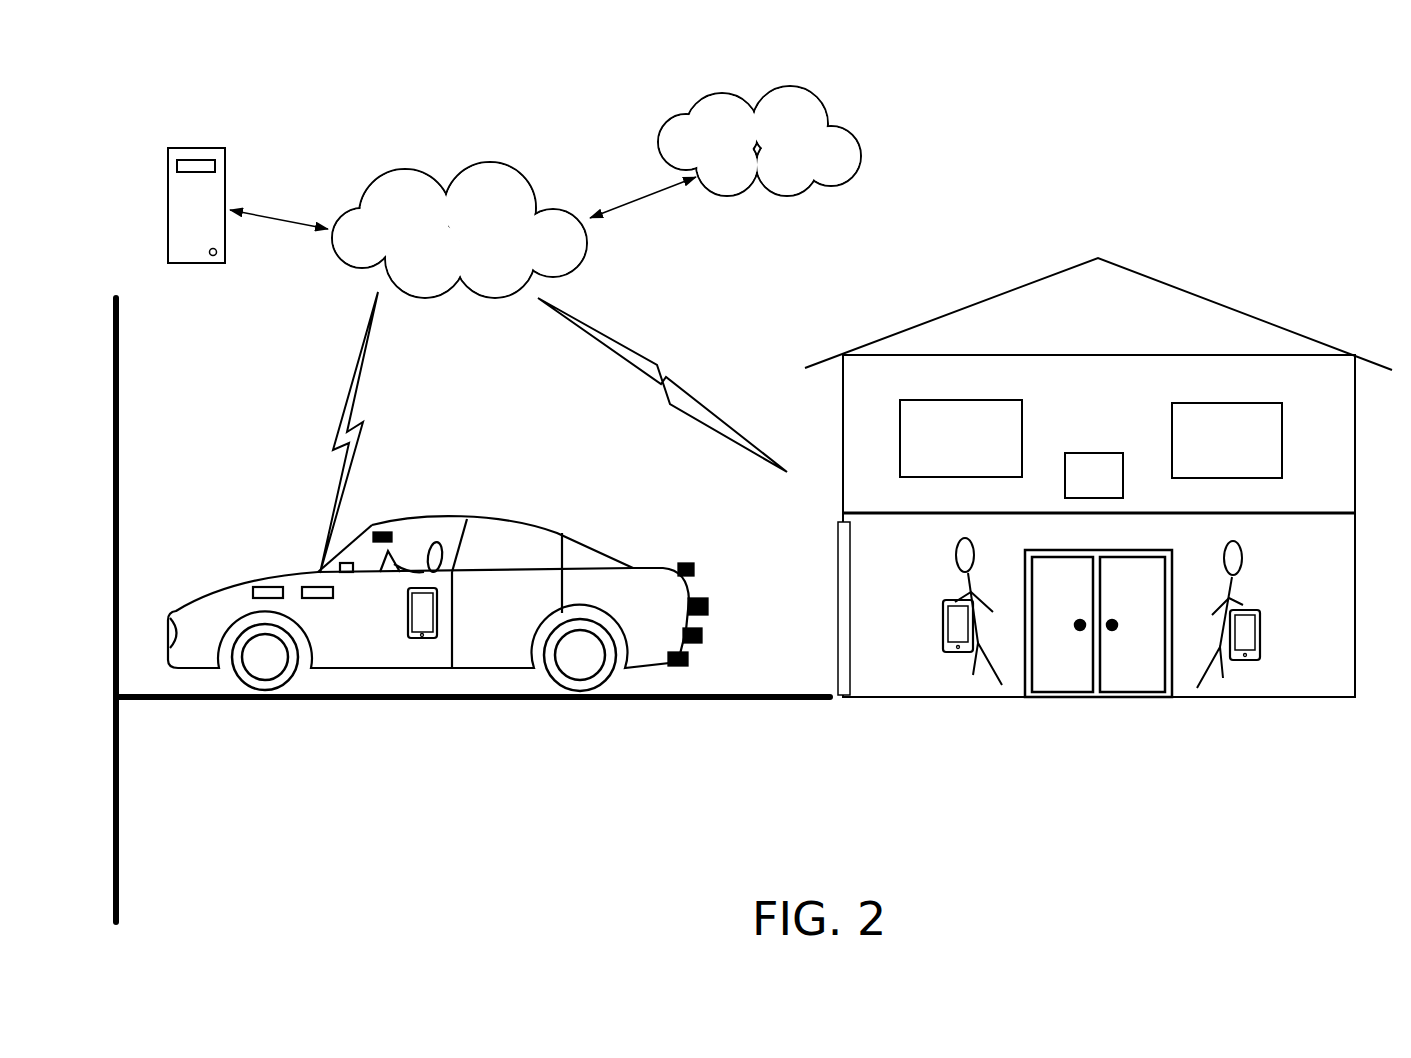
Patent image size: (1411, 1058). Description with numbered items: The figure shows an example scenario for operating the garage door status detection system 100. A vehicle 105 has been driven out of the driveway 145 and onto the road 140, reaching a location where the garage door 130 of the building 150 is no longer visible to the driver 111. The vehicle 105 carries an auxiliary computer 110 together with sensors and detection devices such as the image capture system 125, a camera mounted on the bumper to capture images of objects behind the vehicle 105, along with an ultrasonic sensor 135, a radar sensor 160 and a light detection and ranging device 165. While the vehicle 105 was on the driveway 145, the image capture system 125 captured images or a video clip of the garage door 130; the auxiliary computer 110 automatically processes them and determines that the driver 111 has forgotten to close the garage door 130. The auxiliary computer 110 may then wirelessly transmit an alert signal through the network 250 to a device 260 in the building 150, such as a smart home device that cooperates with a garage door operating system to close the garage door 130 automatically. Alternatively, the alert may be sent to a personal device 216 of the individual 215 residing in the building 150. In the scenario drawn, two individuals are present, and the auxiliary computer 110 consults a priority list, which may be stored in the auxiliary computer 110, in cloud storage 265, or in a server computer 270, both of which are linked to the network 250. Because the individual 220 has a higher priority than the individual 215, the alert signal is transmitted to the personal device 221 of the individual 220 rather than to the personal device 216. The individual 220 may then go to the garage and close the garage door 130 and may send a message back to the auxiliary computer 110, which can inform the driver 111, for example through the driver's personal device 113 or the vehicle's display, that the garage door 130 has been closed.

The garage door status detection system 100 is at (1137, 98).
The vehicle 105 is at (515, 496).
The auxiliary computer 110 is at (313, 598).
The driver 111 is at (426, 528).
The personal device 113 is at (407, 630).
The image capture system 125 is at (703, 612).
The garage door 130 is at (837, 582).
The ultrasonic sensor 135 is at (691, 564).
The road 140 is at (120, 818).
The driveway 145 is at (498, 700).
The building 150 is at (841, 293).
The radar sensor 160 is at (700, 642).
The light detection and ranging (LIDAR) device 165 is at (683, 667).
The individual 215 is at (945, 569).
The personal device 216 is at (938, 616).
The individual 220 is at (1256, 578).
The personal device 221 is at (1265, 625).
The network 250 is at (515, 206).
The device 260 is at (1113, 488).
The cloud storage 265 is at (840, 148).
The server computer 270 is at (243, 132).